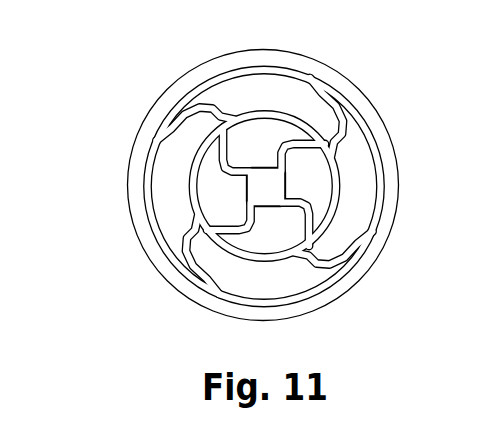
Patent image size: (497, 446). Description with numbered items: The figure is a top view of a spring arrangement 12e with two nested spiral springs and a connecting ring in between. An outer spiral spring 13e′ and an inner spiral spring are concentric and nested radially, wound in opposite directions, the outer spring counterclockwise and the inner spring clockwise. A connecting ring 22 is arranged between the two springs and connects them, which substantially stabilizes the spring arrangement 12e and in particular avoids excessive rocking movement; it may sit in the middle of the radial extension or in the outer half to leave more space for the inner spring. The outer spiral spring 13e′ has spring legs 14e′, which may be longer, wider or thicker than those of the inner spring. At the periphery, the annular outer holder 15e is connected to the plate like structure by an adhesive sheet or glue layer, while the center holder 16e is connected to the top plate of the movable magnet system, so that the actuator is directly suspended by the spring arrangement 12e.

The spring arrangement 12e is at (255, 168).
The outer spiral spring 13e′ is at (177, 223).
The spring leg 14e′ is at (328, 108).
The annular outer holder 15e is at (172, 277).
The center holder 16e is at (266, 188).
The connecting ring 22 is at (336, 200).